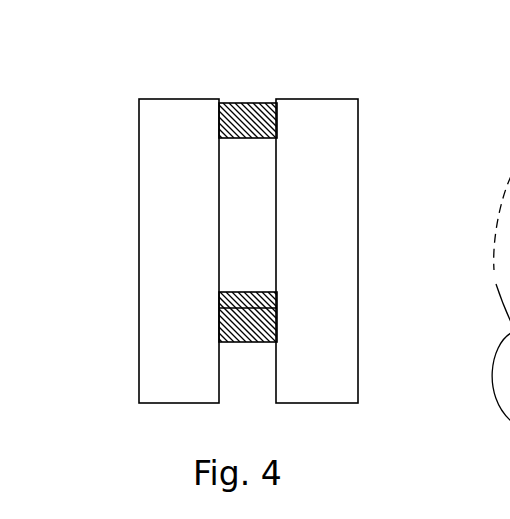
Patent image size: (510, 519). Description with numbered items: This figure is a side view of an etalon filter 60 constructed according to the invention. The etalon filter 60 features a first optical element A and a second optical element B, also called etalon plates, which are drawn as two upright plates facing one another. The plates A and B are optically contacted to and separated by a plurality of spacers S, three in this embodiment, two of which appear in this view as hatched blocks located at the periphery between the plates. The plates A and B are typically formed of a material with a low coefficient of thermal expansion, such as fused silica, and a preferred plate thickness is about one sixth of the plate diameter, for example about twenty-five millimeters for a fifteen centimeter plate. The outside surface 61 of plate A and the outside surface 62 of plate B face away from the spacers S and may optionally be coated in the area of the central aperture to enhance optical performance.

The etalon filter 60 is at (255, 225).
The outside surface of plate A 61 is at (141, 201).
The outside surface of plate B 62 is at (372, 201).
The first optical element A is at (178, 127).
The second optical element B is at (308, 127).
The spacer S is at (248, 127).